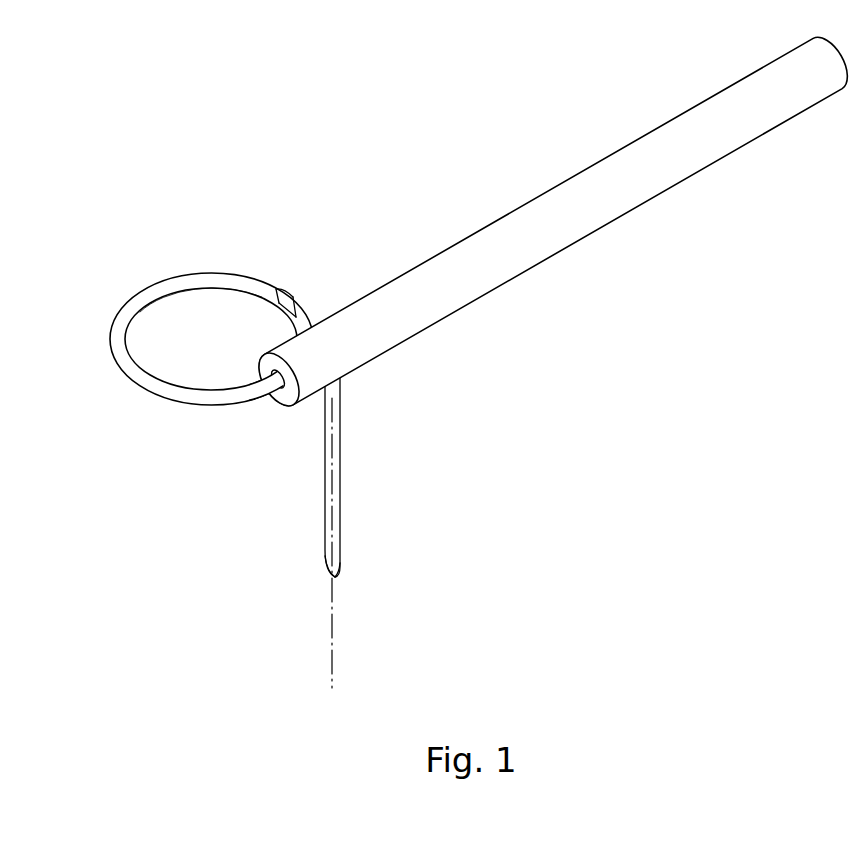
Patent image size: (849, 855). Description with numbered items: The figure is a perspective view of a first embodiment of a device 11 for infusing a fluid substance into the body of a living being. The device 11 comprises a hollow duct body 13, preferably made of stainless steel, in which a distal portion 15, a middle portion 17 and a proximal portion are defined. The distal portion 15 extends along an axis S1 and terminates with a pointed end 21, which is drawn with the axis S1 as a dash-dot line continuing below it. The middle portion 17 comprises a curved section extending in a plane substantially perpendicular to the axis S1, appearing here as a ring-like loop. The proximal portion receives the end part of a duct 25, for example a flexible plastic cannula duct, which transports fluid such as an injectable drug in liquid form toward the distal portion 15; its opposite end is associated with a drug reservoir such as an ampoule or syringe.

The device 11 is at (478, 380).
The hollow duct body 13 is at (315, 266).
The distal portion 15 is at (341, 462).
The middle portion 17 is at (153, 404).
The pointed end 21 is at (340, 566).
The duct 25 is at (645, 190).
The axis S1 is at (329, 560).